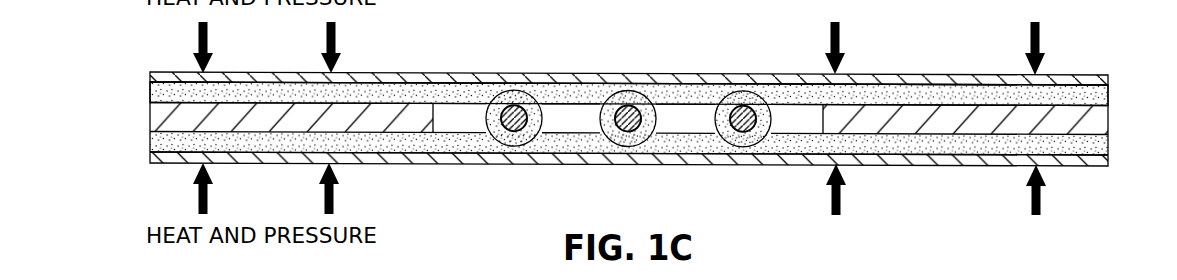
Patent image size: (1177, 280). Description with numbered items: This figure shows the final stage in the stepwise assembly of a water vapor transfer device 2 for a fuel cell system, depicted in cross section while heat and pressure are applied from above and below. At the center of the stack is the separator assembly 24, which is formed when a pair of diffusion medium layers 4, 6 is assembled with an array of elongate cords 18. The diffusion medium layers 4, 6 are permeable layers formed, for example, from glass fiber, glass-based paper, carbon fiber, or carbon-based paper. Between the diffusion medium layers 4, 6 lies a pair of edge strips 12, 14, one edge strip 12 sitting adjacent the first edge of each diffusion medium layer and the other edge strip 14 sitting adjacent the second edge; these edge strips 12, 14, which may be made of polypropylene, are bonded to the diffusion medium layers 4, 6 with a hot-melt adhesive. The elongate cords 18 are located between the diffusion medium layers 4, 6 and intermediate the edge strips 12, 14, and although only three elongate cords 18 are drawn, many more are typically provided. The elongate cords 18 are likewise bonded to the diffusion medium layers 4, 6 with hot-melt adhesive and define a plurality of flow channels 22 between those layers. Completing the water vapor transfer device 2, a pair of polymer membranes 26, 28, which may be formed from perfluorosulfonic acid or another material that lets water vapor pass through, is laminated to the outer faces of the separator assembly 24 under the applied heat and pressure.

The water vapor transfer device 2 is at (97, 72).
The separator assembly 24 is at (135, 86).
The polymer membrane 26 is at (388, 72).
The polymer membrane 28 is at (387, 163).
The edge strip 12 is at (278, 102).
The edge strip 14 is at (940, 102).
The diffusion medium layer 4 is at (873, 63).
The diffusion medium layer 6 is at (872, 175).
The elongate cords 18 is at (616, 106).
The flow channels 22 is at (815, 128).